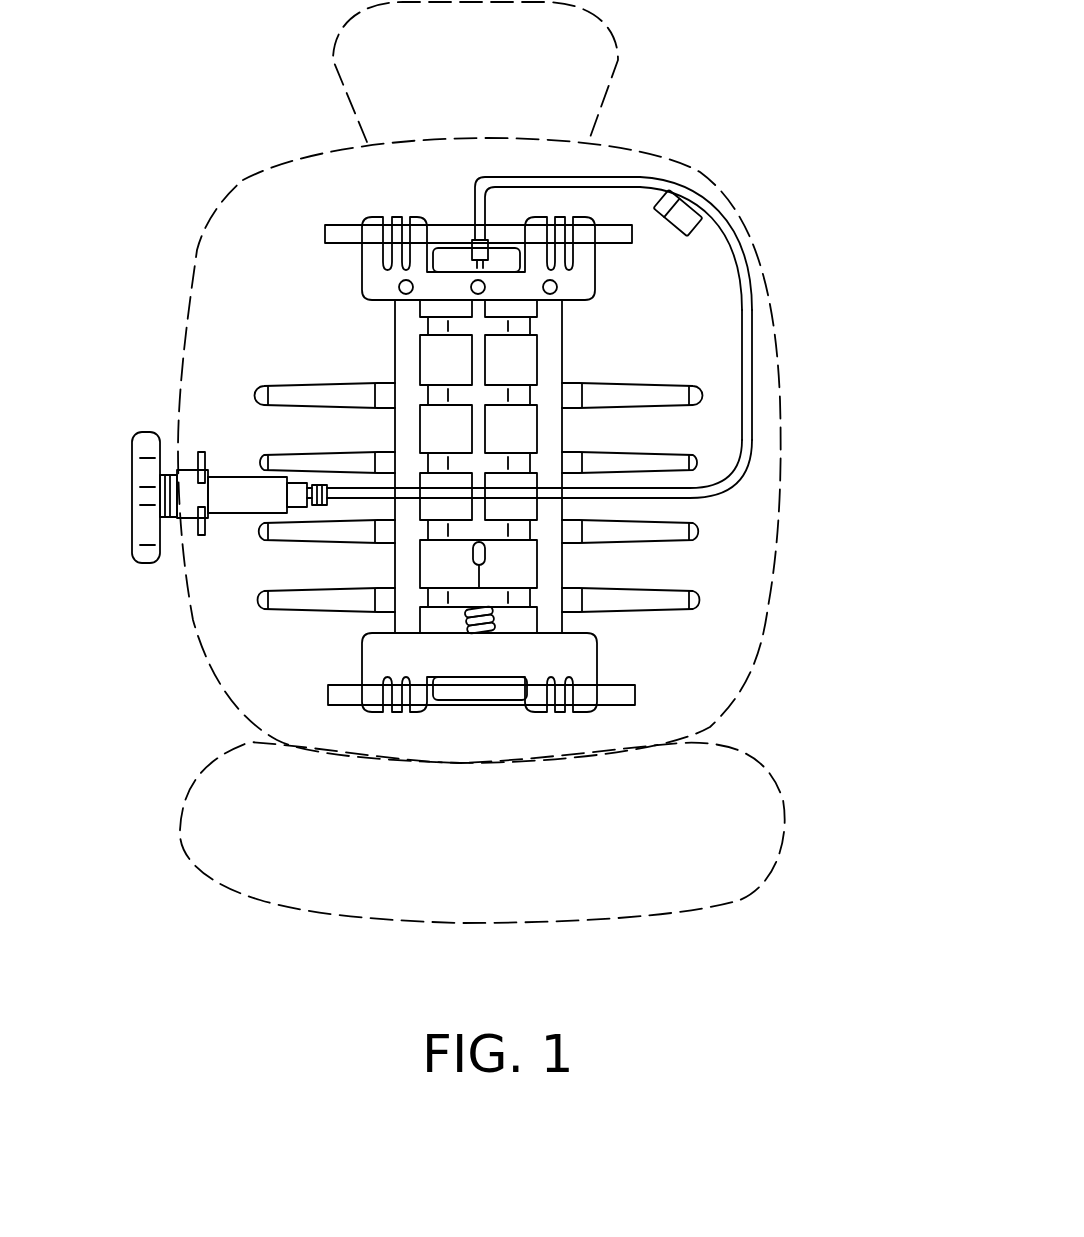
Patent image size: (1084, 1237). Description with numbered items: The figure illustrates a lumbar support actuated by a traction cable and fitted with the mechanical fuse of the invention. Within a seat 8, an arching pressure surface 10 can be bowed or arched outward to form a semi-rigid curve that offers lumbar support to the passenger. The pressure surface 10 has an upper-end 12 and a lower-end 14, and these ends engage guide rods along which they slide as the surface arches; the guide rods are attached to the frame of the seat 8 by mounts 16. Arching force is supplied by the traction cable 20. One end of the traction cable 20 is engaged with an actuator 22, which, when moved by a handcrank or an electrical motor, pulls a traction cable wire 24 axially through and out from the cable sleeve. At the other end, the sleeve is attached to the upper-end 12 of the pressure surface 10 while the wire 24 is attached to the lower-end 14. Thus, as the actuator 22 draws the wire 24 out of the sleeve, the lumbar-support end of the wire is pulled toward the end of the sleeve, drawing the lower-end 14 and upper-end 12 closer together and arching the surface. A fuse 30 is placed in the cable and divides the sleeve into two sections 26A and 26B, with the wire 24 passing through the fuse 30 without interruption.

The seat 8 is at (268, 342).
The arching pressure surface 10 is at (670, 563).
The upper-end 12 is at (375, 283).
The lower-end 14 is at (572, 658).
The mounts 16 is at (347, 695).
The traction cable 20 is at (745, 487).
The actuator 22 is at (232, 490).
The traction cable wire 24 is at (478, 573).
The sleeve section 26A is at (475, 180).
The sleeve section 26B is at (747, 352).
The fuse 30 is at (692, 192).